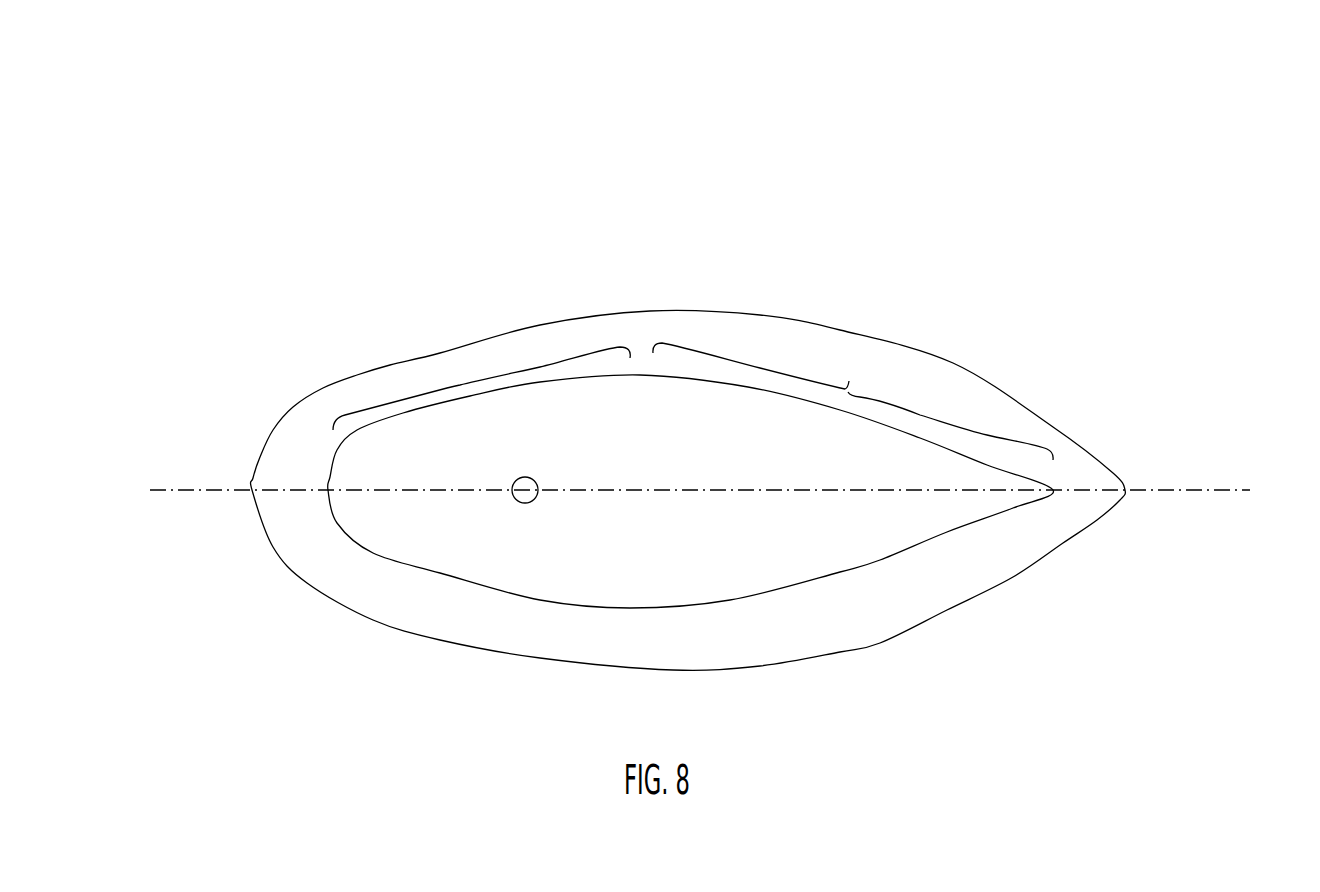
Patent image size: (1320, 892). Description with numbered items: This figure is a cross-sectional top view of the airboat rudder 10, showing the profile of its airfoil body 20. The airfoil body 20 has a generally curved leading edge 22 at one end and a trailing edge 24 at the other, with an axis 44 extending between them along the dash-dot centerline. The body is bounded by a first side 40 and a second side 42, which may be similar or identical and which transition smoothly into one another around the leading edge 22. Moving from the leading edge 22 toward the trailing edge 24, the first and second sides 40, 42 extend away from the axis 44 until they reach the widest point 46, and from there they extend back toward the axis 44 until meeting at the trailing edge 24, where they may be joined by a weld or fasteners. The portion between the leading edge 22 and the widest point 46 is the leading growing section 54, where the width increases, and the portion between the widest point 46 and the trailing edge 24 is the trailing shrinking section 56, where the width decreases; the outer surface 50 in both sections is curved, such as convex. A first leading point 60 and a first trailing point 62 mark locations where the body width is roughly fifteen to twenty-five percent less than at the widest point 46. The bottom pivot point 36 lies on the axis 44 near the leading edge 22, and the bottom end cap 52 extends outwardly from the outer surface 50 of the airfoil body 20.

The airboat rudder 10 is at (776, 120).
The airfoil body 20 is at (748, 387).
The leading edge 22 is at (327, 477).
The trailing edge 24 is at (1067, 493).
The bottom pivot point 36 is at (515, 502).
The first side 40 is at (573, 375).
The second side 42 is at (605, 608).
The axis 44 is at (721, 490).
The widest point 46 is at (640, 373).
The outer surface 50 is at (872, 418).
The bottom end cap 52 is at (528, 636).
The leading growing section 54 is at (453, 387).
The trailing shrinking section 56 is at (848, 392).
The first leading point 60 is at (487, 393).
The first trailing point 62 is at (778, 393).